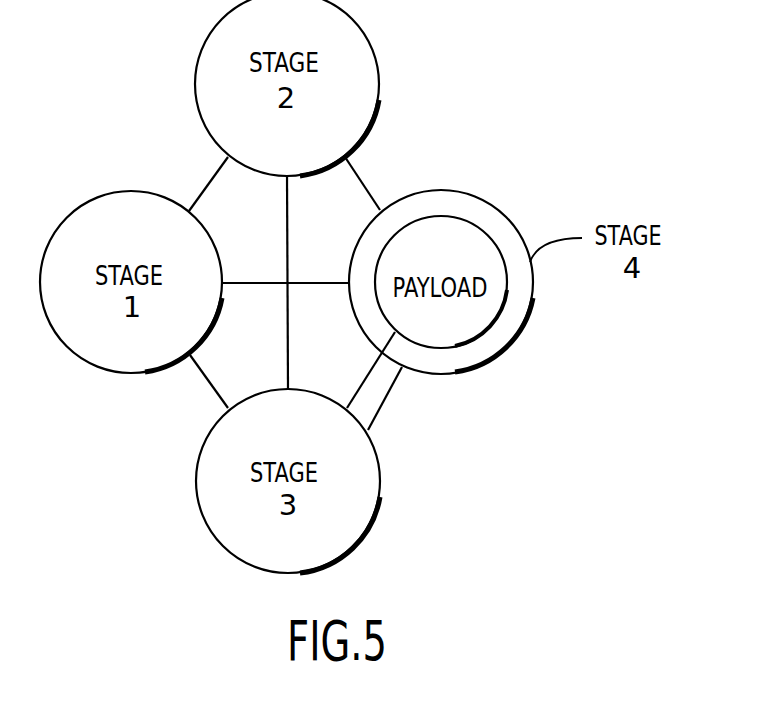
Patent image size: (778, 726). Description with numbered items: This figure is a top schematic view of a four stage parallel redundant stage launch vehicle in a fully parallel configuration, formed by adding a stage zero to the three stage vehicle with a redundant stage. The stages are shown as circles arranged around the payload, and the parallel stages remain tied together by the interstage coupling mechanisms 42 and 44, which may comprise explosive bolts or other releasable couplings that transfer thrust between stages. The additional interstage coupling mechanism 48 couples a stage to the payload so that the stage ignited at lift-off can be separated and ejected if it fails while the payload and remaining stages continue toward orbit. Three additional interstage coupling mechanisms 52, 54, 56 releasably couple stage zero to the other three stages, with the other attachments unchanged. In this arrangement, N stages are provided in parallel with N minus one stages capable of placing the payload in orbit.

The interstage coupling mechanism 42 is at (363, 178).
The interstage coupling mechanism 44 is at (383, 400).
The additional interstage coupling mechanism 48 is at (369, 412).
The interstage coupling mechanism 52 is at (207, 378).
The interstage coupling mechanism 54 is at (245, 285).
The interstage coupling mechanism 56 is at (210, 182).